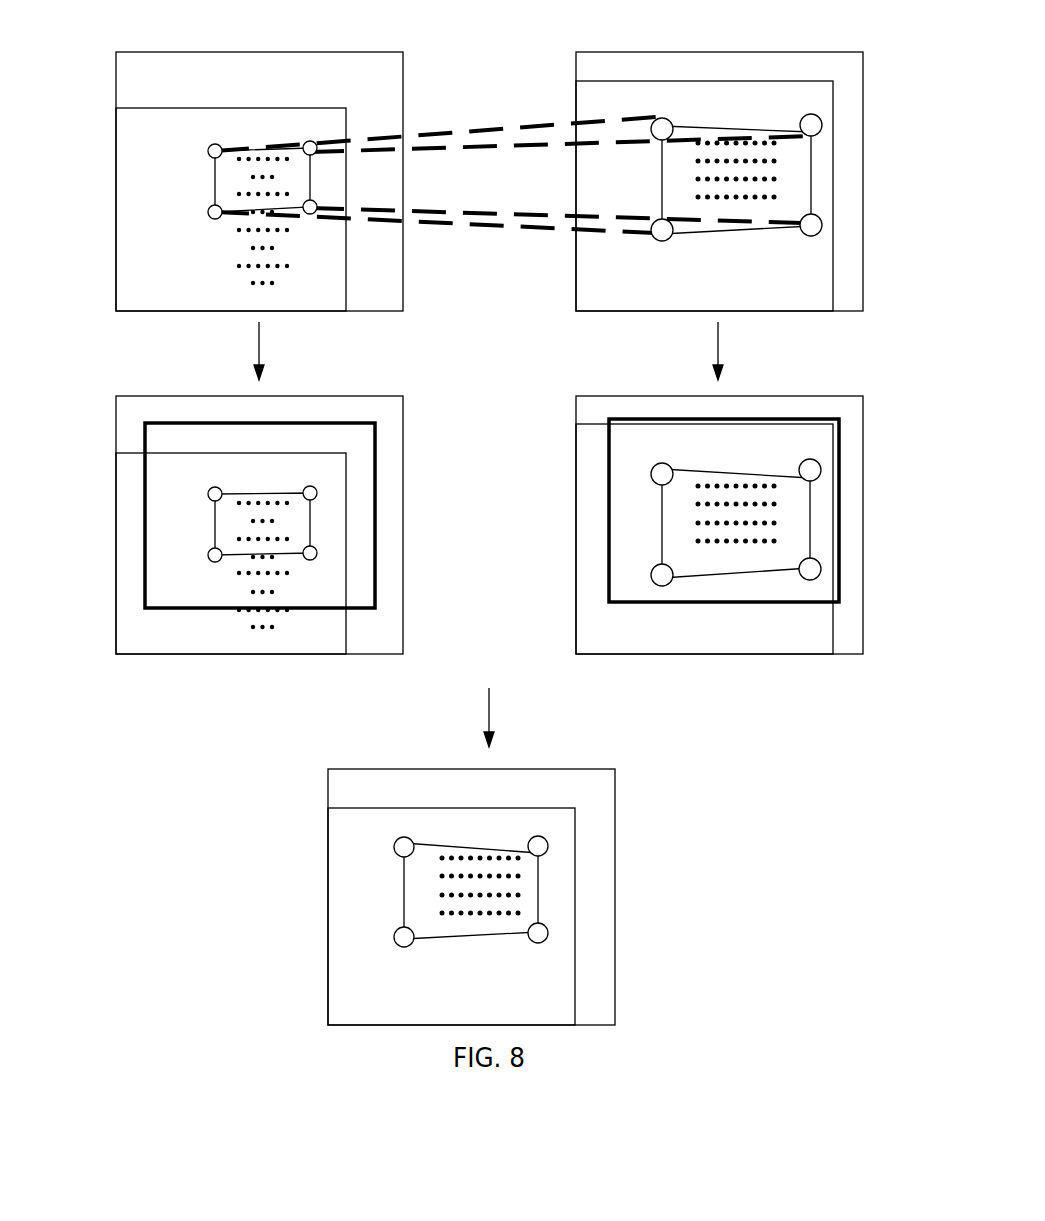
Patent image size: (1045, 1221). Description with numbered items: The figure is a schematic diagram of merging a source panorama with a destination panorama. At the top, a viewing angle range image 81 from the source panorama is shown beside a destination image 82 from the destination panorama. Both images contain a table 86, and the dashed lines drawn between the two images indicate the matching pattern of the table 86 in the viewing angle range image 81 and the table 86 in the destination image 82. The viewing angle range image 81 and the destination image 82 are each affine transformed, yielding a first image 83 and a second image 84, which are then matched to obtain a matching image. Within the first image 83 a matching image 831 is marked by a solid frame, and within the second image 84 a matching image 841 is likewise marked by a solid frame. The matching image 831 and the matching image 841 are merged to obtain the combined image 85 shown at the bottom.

The viewing angle range image 81 is at (215, 181).
The destination image 82 is at (761, 181).
The first image 83 is at (215, 525).
The matching image 831 is at (307, 515).
The second image 84 is at (761, 525).
The matching image 841 is at (772, 501).
The combined image 85 is at (514, 897).
The table 86 is at (535, 142).